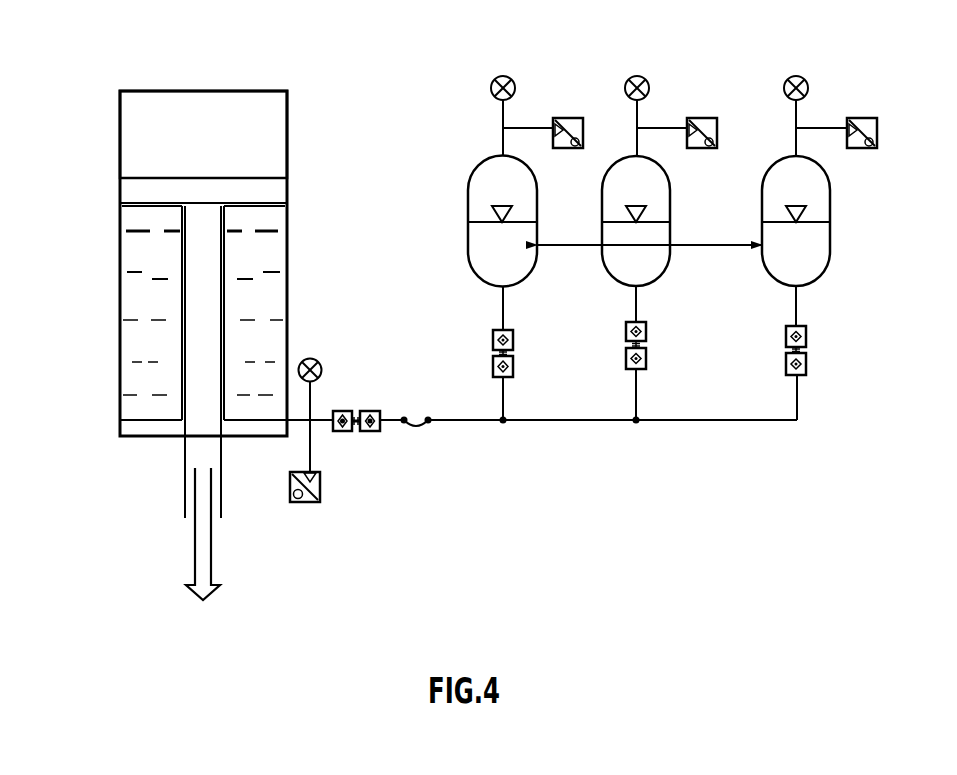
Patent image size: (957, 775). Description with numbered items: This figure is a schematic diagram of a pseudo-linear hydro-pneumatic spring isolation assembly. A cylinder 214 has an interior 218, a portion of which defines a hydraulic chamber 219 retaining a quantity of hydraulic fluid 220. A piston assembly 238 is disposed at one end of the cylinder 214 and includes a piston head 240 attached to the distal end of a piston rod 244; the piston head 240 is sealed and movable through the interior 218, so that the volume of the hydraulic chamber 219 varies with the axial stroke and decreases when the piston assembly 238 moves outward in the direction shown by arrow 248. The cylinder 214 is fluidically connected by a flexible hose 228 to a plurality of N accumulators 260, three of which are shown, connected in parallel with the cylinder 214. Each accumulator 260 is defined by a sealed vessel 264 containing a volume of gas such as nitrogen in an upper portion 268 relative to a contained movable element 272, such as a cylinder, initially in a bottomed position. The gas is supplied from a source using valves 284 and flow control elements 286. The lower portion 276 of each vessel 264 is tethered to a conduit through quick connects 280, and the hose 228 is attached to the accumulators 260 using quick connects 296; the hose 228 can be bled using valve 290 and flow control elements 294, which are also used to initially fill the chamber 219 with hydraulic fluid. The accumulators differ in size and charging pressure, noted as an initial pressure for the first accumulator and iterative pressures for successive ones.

The cylinder 214 is at (118, 127).
The interior 218 is at (273, 135).
The piston assembly 238 is at (130, 192).
The piston head 240 is at (273, 193).
The piston rod 244 is at (207, 343).
The hydraulic chamber 219 is at (145, 410).
The hydraulic fluid 220 is at (235, 408).
The arrow 248 is at (195, 537).
The flexible hose 228 is at (298, 421).
The valve 290 is at (322, 371).
The flow control elements 294 is at (320, 495).
The quick connects 296 is at (370, 431).
The accumulators 260 is at (468, 192).
The sealed vessels 264 is at (468, 250).
The upper portion 268 is at (480, 166).
The movable element 272 is at (523, 220).
The lower portion 276 is at (487, 265).
The quick connects 280 is at (513, 355).
The valves 284 is at (503, 76).
The flow control elements 286 is at (573, 118).